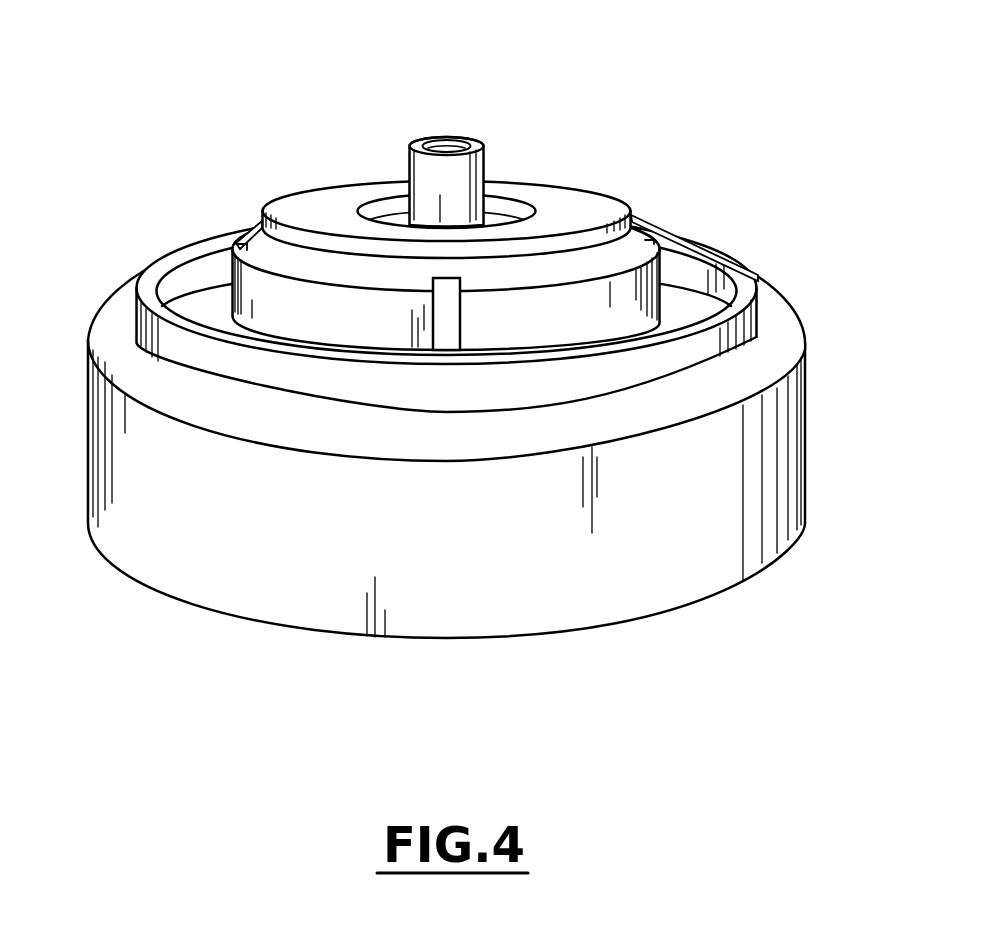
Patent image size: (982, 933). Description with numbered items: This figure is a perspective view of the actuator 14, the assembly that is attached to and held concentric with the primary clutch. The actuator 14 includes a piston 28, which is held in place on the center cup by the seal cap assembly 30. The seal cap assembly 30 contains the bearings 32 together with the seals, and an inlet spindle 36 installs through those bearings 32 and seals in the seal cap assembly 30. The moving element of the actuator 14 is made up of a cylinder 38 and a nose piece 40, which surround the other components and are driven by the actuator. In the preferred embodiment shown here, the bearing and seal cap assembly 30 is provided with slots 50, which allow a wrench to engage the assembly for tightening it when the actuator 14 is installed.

The actuator 14 is at (474, 323).
The piston 28 is at (683, 293).
The seal cap assembly 30 is at (617, 257).
The bearings 32 is at (497, 217).
The inlet spindle 36 is at (477, 137).
The cylinder 38 is at (737, 264).
The nose piece 40 is at (777, 337).
The slots 50 is at (233, 243).